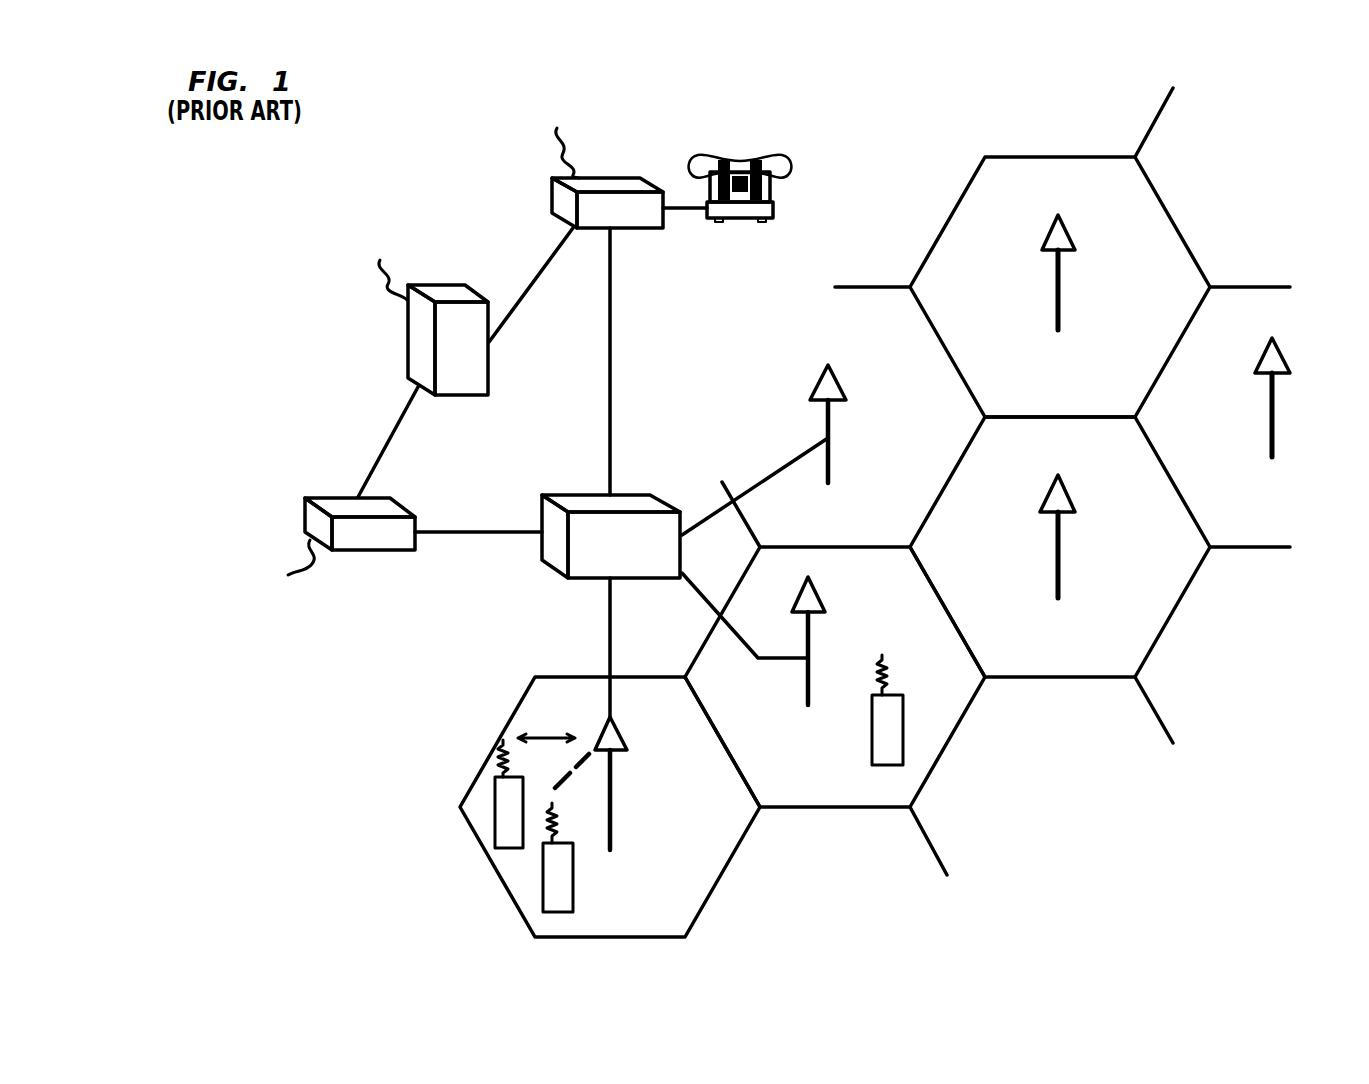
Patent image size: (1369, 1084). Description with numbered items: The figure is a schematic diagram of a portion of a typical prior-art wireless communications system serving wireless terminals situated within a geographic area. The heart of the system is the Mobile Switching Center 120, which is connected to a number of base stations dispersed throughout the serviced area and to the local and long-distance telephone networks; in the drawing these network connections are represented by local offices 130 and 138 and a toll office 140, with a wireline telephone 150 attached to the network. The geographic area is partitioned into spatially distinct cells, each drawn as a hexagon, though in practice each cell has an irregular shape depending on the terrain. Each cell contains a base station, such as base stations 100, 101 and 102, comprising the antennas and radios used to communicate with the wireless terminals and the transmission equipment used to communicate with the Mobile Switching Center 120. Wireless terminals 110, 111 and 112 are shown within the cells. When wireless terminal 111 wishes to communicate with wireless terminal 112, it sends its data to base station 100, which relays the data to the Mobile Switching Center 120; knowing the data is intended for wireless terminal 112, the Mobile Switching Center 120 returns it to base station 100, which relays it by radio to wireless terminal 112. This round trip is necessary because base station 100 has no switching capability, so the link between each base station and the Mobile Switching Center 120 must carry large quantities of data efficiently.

The base station 100 is at (616, 767).
The base station 101 is at (808, 696).
The base station 102 is at (836, 422).
The mobile station 110 is at (873, 755).
The wireless terminal 111 is at (573, 887).
The wireless terminal 112 is at (476, 800).
The Mobile Switching Center 120 is at (538, 553).
The local office 130 is at (552, 180).
The local office 138 is at (303, 515).
The toll office 140 is at (408, 345).
The telephone 150 is at (750, 222).